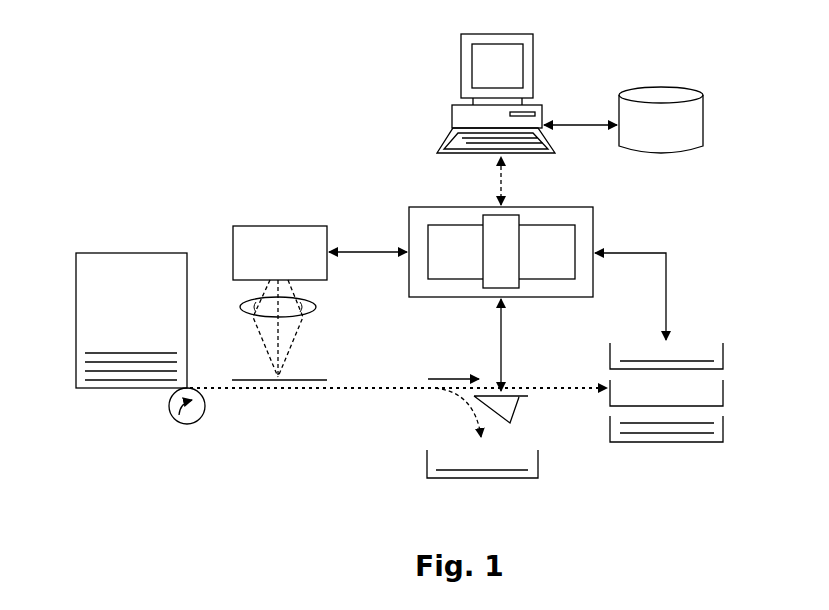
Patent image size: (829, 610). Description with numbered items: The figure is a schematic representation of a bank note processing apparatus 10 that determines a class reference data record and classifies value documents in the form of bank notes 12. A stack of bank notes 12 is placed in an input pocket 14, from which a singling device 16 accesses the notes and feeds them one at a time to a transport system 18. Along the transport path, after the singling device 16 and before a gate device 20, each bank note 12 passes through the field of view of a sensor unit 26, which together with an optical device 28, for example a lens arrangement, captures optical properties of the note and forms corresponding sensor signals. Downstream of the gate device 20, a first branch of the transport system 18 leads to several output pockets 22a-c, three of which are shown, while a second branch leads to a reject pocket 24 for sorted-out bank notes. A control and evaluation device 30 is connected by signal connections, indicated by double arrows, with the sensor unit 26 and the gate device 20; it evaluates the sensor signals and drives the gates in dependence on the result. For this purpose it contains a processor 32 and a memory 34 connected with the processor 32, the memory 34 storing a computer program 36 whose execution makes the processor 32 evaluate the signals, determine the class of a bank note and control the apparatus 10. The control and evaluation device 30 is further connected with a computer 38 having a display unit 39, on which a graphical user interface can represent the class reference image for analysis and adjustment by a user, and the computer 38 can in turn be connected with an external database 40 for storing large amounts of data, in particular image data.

The apparatus 10 is at (278, 142).
The bank notes 12 is at (123, 352).
The input pocket 14 is at (132, 252).
The singling device 16 is at (187, 425).
The transport system 18 is at (268, 388).
The gate device 20 is at (519, 396).
The output pockets 22a-c is at (723, 433).
The reject pocket 24 is at (518, 479).
The sensor unit 26 is at (233, 242).
The optical device 28 is at (315, 307).
The control and evaluation device 30 is at (484, 224).
The processor 32 is at (460, 252).
The memory 34 is at (542, 252).
The computer program 36 is at (510, 215).
The computer 38 is at (479, 93).
The display unit 39 is at (497, 66).
The external database 40 is at (661, 120).